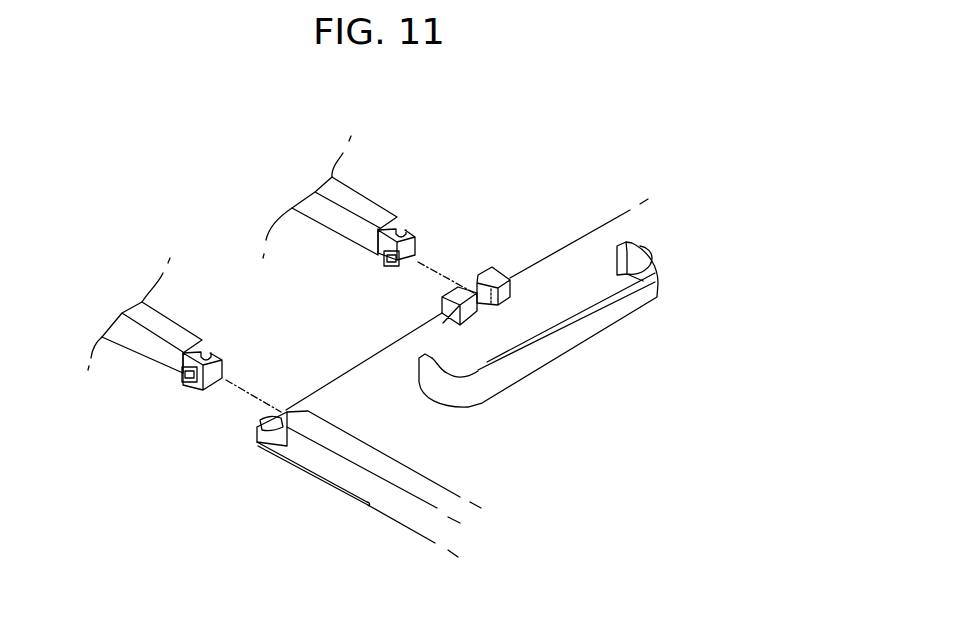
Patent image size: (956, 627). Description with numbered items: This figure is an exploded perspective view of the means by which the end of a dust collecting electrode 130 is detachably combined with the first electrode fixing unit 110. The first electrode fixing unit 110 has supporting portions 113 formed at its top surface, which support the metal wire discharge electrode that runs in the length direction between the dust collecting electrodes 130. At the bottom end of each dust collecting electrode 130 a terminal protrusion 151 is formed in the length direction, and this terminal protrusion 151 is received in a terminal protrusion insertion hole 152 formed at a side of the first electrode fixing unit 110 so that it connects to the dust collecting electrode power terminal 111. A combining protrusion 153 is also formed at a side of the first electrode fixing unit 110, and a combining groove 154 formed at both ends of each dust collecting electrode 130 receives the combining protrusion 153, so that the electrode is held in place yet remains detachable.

The first electrode fixing unit 110 is at (391, 499).
The dust collecting electrode power terminal 111 is at (294, 465).
The supporting portions 113 is at (433, 356).
The dust collecting electrode 130 is at (357, 202).
The terminal protrusion 151 is at (383, 257).
The terminal protrusion insertion hole 152 is at (255, 418).
The combining protrusion 153 is at (477, 282).
The combining groove 154 is at (404, 231).